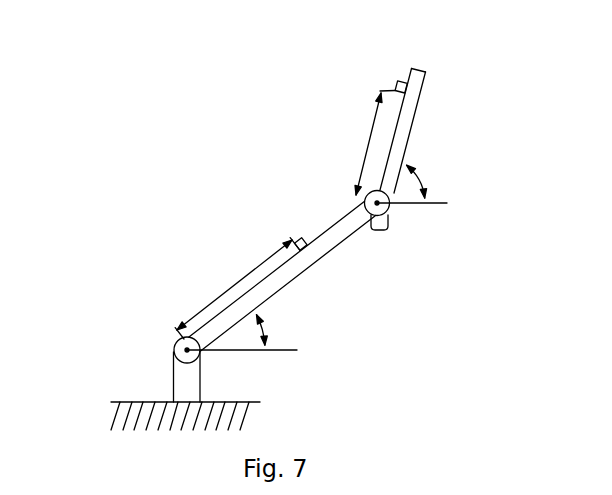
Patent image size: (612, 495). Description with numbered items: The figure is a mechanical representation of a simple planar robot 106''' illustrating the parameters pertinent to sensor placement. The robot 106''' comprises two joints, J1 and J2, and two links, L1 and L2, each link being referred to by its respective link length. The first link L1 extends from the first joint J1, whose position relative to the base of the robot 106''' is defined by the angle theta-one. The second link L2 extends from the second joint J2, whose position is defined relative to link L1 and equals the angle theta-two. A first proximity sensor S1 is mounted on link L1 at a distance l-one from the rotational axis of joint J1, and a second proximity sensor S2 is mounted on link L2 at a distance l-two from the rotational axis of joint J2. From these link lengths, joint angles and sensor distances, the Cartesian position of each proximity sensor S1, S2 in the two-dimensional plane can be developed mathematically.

The robot 106''' is at (278, 261).
The joint J1 is at (174, 350).
The joint J2 is at (388, 226).
The link L1 is at (287, 284).
The link L2 is at (407, 147).
The first proximity sensor S1 is at (294, 237).
The second proximity sensor S2 is at (395, 86).